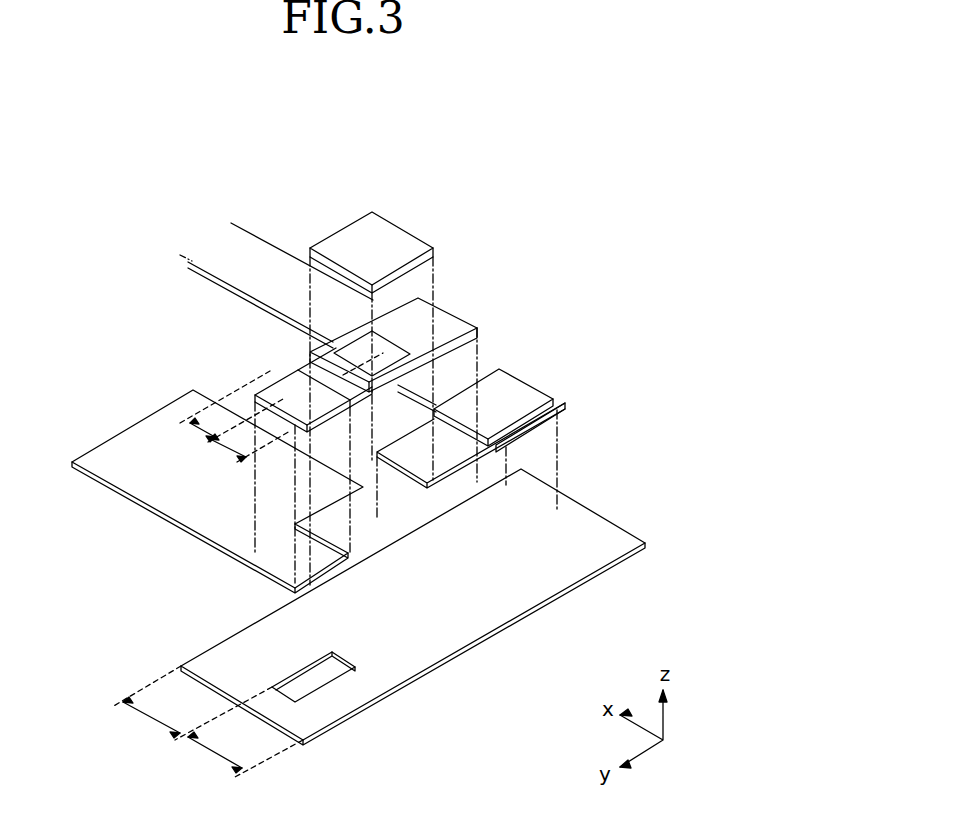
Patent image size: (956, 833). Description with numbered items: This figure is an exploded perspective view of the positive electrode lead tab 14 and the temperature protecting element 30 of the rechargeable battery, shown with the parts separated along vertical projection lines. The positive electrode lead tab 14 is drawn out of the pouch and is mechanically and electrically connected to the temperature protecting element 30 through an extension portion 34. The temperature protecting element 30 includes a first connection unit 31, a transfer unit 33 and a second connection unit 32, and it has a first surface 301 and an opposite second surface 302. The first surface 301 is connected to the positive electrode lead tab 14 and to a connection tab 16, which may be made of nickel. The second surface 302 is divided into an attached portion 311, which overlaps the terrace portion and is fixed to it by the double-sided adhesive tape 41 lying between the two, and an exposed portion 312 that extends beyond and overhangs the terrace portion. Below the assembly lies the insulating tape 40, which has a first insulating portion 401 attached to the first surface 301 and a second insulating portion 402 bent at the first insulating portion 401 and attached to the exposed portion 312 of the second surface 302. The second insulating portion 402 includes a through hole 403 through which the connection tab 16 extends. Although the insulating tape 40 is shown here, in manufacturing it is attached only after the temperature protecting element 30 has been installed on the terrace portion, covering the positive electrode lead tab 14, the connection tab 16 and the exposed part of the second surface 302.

The positive electrode lead tab 14 is at (247, 285).
The connection tab 16 is at (178, 497).
The temperature protecting element 30 is at (468, 207).
The first connection unit 31 is at (285, 390).
The second connection unit 32 is at (438, 315).
The transfer unit 33 is at (525, 246).
The extension portion 34 is at (437, 458).
The insulating tape 40 is at (378, 625).
The double-sided adhesive tape 41 is at (377, 235).
The first surface 301 is at (440, 410).
The second surface 302 is at (388, 353).
The attached portion 311 is at (238, 453).
The exposed portion 312 is at (218, 413).
The first insulating portion 401 is at (192, 708).
The second insulating portion 402 is at (236, 756).
The through hole 403 is at (310, 680).